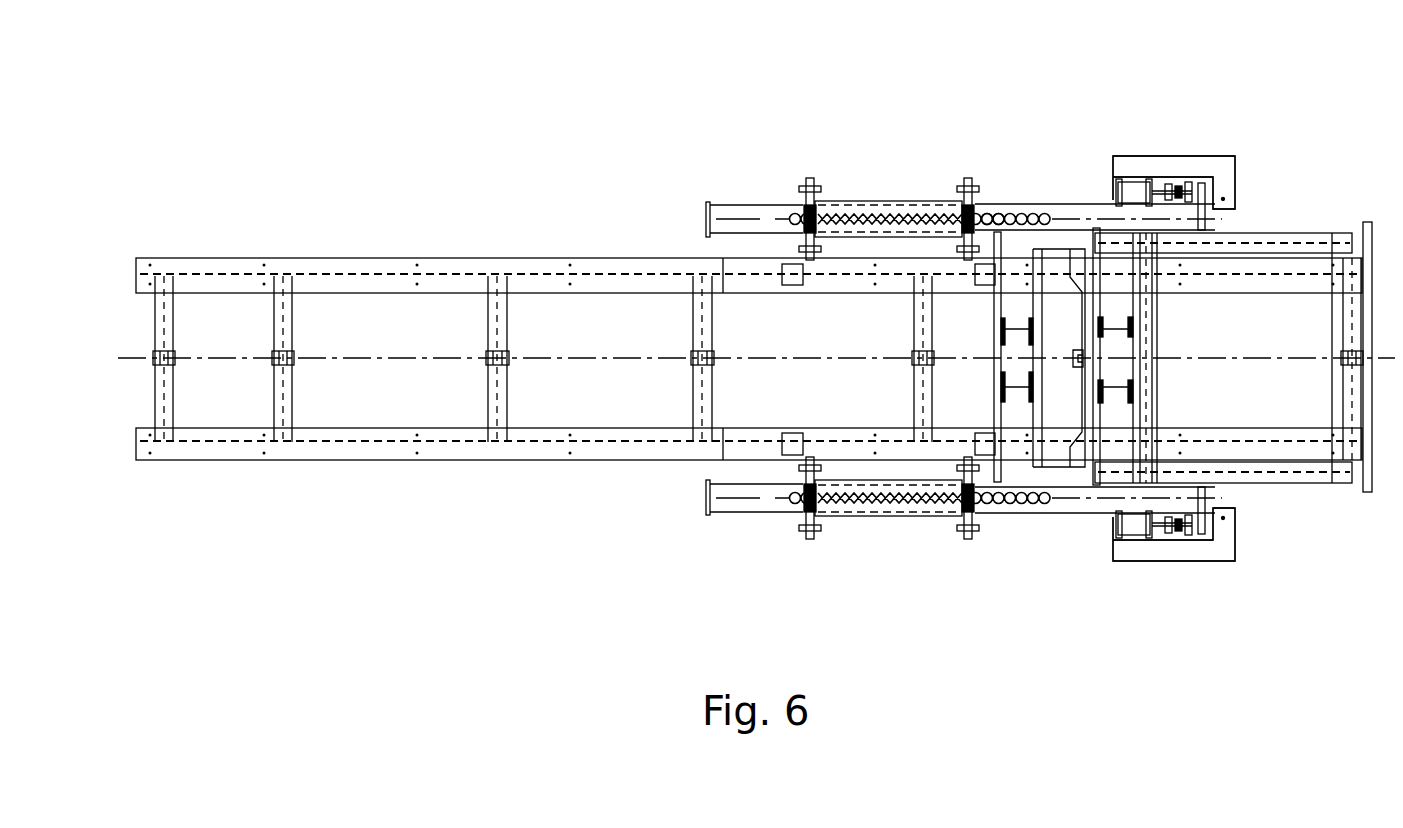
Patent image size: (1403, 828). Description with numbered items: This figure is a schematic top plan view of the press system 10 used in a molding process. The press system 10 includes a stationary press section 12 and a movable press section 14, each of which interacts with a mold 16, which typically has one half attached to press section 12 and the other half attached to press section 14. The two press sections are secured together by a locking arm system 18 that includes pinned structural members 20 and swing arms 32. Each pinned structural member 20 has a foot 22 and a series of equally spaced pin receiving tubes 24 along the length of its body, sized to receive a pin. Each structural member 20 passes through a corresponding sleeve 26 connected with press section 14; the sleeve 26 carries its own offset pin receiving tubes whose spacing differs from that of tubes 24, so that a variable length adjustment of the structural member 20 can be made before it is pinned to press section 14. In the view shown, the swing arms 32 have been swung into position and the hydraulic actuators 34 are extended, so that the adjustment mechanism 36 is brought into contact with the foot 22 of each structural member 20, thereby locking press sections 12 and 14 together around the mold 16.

The press system 10 is at (507, 159).
The press section 12 is at (1310, 232).
The press section 14 is at (908, 164).
The mold 16 is at (1073, 337).
The locking arm system 18 is at (1156, 108).
The pinned structural member 20 is at (770, 205).
The foot 22 is at (1205, 193).
The pin receiving tubes 24 is at (1000, 214).
The sleeve 26 is at (836, 200).
The swing arms 32 is at (1163, 157).
The hydraulic actuators 34 is at (1114, 194).
The adjustment mechanism 36 is at (1183, 190).